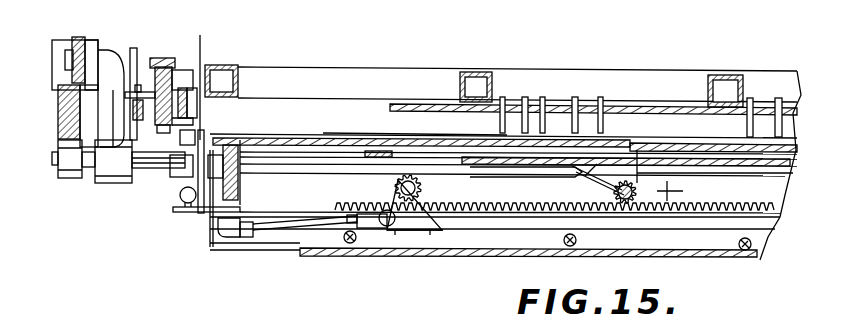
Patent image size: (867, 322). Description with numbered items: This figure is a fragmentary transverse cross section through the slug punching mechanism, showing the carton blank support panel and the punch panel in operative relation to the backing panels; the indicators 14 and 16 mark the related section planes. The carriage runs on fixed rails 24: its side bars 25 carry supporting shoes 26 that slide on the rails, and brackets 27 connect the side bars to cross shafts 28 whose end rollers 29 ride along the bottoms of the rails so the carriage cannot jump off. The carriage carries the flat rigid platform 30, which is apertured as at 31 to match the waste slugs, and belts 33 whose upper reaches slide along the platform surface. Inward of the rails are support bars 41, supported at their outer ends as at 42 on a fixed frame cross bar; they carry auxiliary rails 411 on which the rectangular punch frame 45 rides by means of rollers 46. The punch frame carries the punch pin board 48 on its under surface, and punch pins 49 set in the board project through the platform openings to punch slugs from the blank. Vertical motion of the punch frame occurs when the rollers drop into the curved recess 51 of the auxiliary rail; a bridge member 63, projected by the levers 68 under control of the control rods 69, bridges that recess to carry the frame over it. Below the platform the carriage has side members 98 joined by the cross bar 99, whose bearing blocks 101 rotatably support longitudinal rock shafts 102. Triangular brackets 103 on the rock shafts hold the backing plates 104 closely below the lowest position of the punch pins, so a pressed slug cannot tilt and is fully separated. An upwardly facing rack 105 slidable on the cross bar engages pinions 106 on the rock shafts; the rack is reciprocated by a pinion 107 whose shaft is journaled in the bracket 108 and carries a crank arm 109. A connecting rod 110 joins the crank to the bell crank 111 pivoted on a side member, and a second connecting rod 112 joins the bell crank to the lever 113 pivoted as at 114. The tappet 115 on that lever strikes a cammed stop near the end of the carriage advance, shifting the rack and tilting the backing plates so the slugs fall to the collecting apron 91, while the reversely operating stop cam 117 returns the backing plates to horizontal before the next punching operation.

The section line plane reference 14 is at (131, 48).
The figure reference plane 16 is at (203, 33).
The rail 24 is at (60, 113).
The side bar 25 is at (78, 37).
The supporting shoe 26 is at (60, 64).
The bracket 27 is at (100, 178).
The cross shaft 28 is at (145, 172).
The roller 29 is at (68, 180).
The platform 30 is at (268, 139).
The aperture 31 is at (610, 150).
The belt 33 is at (370, 150).
The support bar 41 is at (162, 56).
The outer end support 42 is at (835, 5).
The punch frame 45 is at (490, 76).
The roller 46 is at (185, 70).
The punch pin board 48 is at (620, 105).
The punch pin 49 is at (576, 97).
The curved recess 51 is at (376, 311).
The bridge member 63 is at (342, 311).
The lever 68 is at (148, 95).
The control rod 69 is at (140, 120).
The collecting apron 91 is at (230, 240).
The side member 98 is at (243, 191).
The cross bar 99 is at (325, 201).
The bearing block 101 is at (686, 192).
The rock shaft 102 is at (630, 203).
The triangular bracket 103 is at (574, 181).
The backing plate 104 is at (481, 157).
The rack 105 is at (488, 213).
The pinion 106 is at (622, 203).
The pinion 107 is at (425, 185).
The bracket 108 is at (428, 224).
The crank arm 109 is at (390, 228).
The connecting rod 110 is at (330, 224).
The bell crank 111 is at (213, 217).
The second connecting rod 112 is at (200, 210).
The lever 113 is at (204, 133).
The pivot 114 is at (395, 188).
The tappet 115 is at (180, 170).
The stop cam 117 is at (182, 201).
The auxiliary rail 411 is at (195, 105).